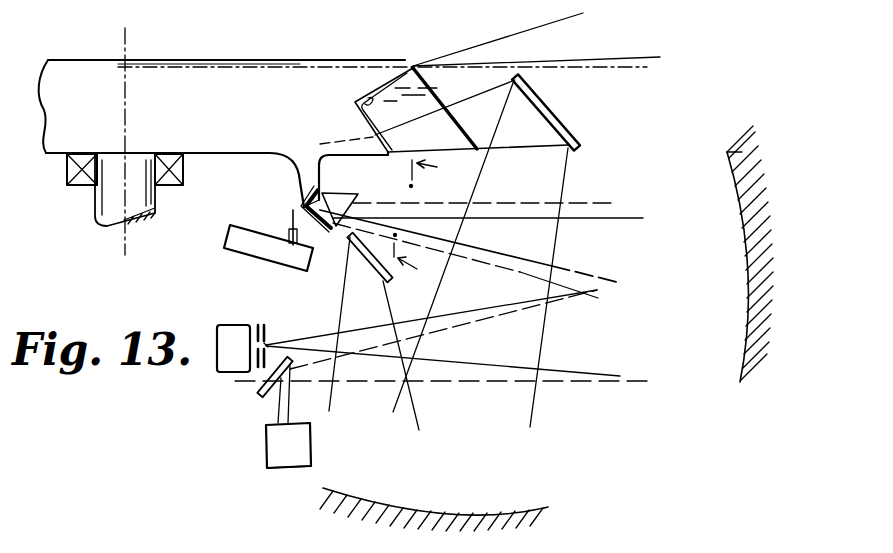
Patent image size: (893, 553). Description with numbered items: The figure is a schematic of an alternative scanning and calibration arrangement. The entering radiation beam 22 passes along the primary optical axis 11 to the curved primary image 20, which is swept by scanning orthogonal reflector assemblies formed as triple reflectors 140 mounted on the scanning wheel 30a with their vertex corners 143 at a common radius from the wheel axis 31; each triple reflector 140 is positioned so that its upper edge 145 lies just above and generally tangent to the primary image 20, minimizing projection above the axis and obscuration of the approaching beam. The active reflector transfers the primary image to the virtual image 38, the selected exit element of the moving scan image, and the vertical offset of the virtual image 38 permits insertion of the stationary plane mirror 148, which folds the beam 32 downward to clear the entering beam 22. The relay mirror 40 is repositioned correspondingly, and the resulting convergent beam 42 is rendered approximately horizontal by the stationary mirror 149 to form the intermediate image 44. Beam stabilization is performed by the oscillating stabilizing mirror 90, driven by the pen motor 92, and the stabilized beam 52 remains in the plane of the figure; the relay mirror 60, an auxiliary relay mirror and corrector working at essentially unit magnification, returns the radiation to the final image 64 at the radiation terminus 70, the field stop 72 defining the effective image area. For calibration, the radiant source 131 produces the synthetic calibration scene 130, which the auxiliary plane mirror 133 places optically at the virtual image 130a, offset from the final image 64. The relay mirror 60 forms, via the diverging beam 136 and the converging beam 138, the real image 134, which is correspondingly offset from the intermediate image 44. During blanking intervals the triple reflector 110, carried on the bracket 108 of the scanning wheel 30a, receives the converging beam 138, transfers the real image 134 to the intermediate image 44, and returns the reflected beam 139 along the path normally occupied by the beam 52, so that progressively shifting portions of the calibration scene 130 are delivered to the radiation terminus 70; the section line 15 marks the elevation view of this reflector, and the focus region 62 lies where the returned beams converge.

The primary optical axis 11 is at (612, 70).
The section line 15- 15 is at (430, 225).
The primary image 20 is at (437, 71).
The entering radiation beam 22 is at (548, 24).
The scanning wheel 30a is at (273, 50).
The wheel axis 31 is at (125, 43).
The beam 32 is at (530, 424).
The virtual image 38 is at (320, 141).
The relay mirror 40 is at (483, 510).
The convergent beam 42 is at (395, 390).
The intermediate image 44 is at (289, 219).
The stabilized beam 52 is at (612, 243).
The relay mirror 60 is at (745, 332).
The focus region 62 is at (563, 293).
The final image 64 is at (268, 345).
The radiation terminus 70 is at (233, 325).
The field stop 72 is at (263, 322).
The stabilizing mirror 90 is at (304, 210).
The pen motor 92 is at (227, 232).
The bracket 108 is at (308, 168).
The triple reflector 110 is at (312, 197).
The synthetic calibration scene 130 is at (285, 423).
The virtual image 130a is at (262, 378).
The radiant source 131 is at (268, 457).
The auxiliary plane mirror 133 is at (258, 400).
The real image 134 is at (361, 198).
The diverging beam 136 is at (508, 318).
The converging beam 138 is at (612, 200).
The reflected beam 139 is at (525, 260).
The triple reflector 140 is at (376, 80).
The vertex corner 143 is at (368, 98).
The upper edge 145 is at (414, 66).
The stationary plane mirror 148 is at (569, 131).
The stationary mirror 149 is at (391, 281).